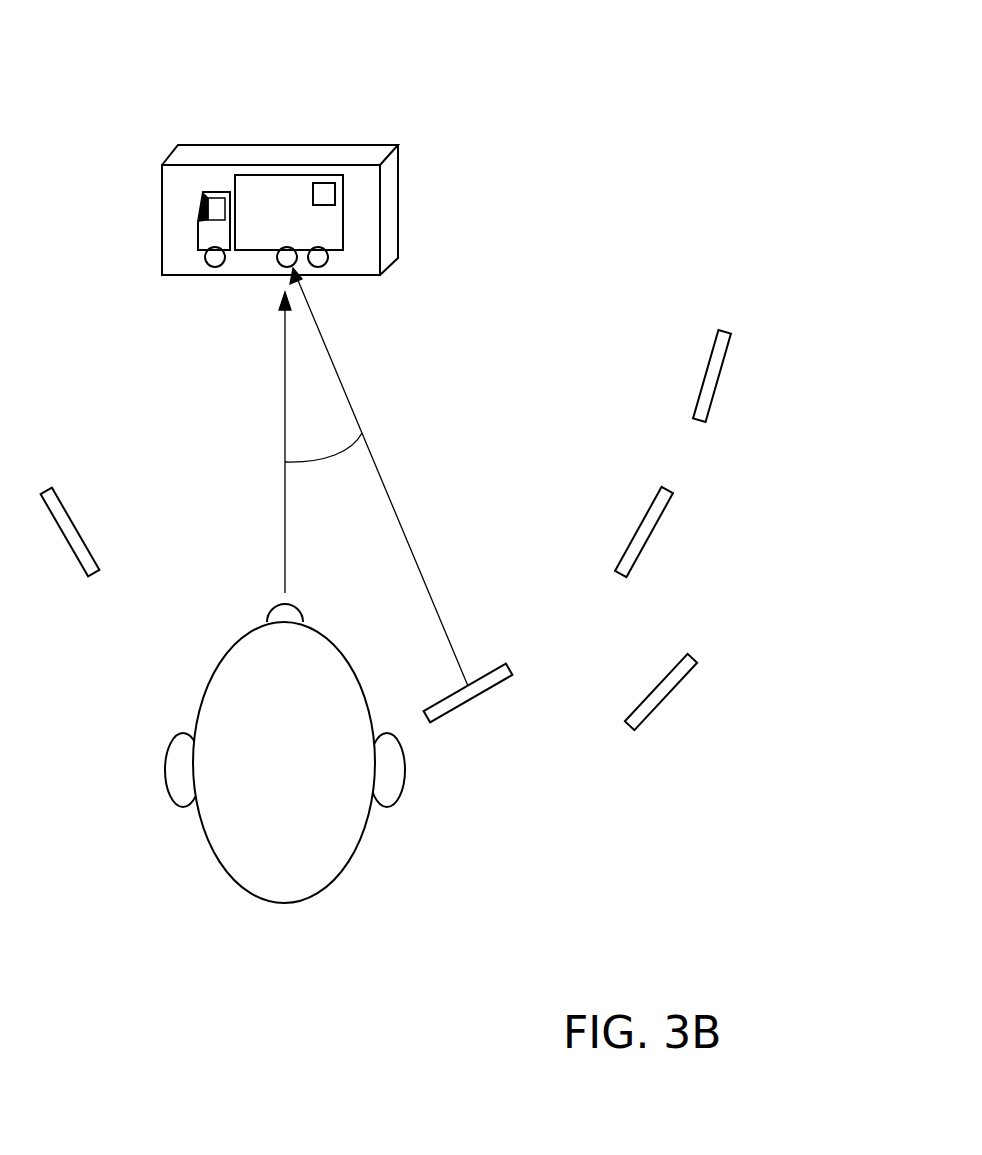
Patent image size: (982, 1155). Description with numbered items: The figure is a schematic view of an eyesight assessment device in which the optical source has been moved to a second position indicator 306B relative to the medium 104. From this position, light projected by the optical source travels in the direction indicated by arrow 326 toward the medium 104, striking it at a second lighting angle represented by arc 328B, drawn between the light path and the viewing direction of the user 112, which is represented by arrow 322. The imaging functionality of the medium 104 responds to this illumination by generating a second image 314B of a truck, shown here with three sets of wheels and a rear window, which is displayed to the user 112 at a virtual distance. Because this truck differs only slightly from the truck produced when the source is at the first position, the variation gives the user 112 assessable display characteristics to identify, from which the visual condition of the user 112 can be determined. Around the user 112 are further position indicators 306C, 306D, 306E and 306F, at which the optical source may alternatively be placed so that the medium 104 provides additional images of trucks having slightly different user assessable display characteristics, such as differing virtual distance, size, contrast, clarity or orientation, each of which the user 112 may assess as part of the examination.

The medium 104 is at (292, 145).
The second image 314B is at (223, 198).
The arrow 322 is at (285, 403).
The arrow 326 is at (347, 392).
The arc 328B is at (285, 462).
The second position indicator 306B is at (513, 672).
The position indicator 306C is at (650, 538).
The position indicator 306D is at (725, 365).
The position indicator 306E is at (670, 700).
The position indicator 306F is at (60, 533).
The user 112 is at (342, 877).